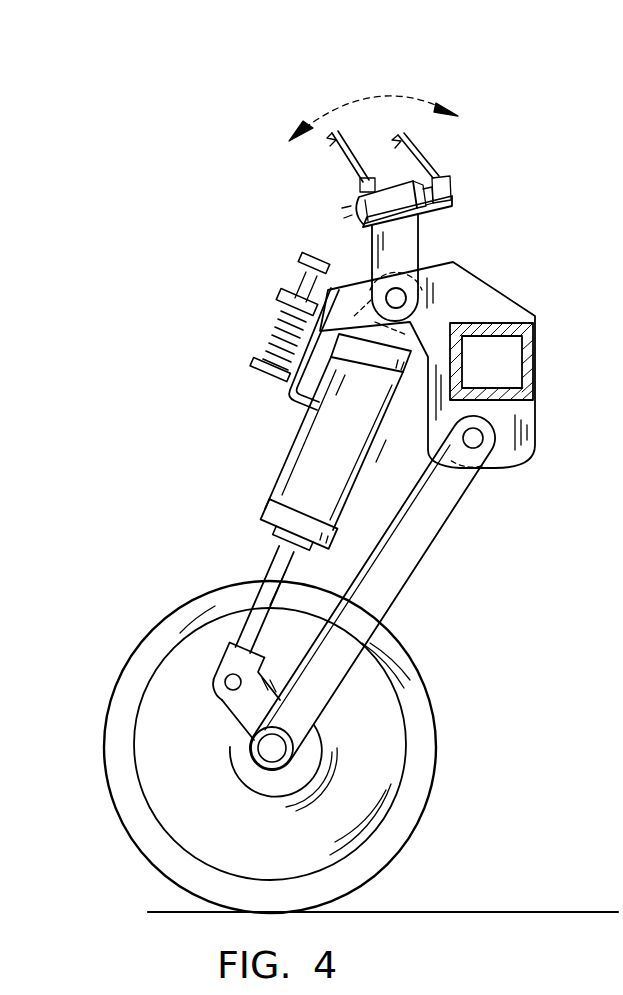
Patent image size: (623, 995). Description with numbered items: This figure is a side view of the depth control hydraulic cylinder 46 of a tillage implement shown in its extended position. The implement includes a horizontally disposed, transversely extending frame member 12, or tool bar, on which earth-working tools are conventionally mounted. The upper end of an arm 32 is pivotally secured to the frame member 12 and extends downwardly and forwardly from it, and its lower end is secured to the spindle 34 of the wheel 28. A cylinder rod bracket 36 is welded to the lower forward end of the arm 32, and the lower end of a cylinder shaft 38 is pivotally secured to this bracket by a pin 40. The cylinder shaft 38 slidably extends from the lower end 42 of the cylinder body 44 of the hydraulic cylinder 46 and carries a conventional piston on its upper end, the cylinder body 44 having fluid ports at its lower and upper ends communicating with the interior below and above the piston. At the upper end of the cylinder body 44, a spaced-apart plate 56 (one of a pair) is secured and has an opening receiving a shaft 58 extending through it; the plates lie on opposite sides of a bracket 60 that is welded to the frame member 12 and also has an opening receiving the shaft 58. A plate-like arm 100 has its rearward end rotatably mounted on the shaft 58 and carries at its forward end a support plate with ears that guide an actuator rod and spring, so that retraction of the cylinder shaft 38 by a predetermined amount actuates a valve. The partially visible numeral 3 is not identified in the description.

The frame member 12 is at (537, 357).
The wheel 28 is at (418, 755).
The arm 32 is at (412, 557).
The spindle 34 is at (280, 752).
The cylinder rod bracket 36 is at (240, 707).
The cylinder shaft 38 is at (273, 555).
The pin 40 is at (223, 690).
The lower end of cylinder body 42 is at (273, 518).
The cylinder body 44 is at (300, 425).
The hydraulic cylinder 46 is at (268, 460).
The plate 56 is at (402, 292).
The shaft 58 is at (420, 263).
The bracket 60 is at (430, 318).
The plate-like arm 100 is at (358, 293).
The frame 3 is at (615, 517).